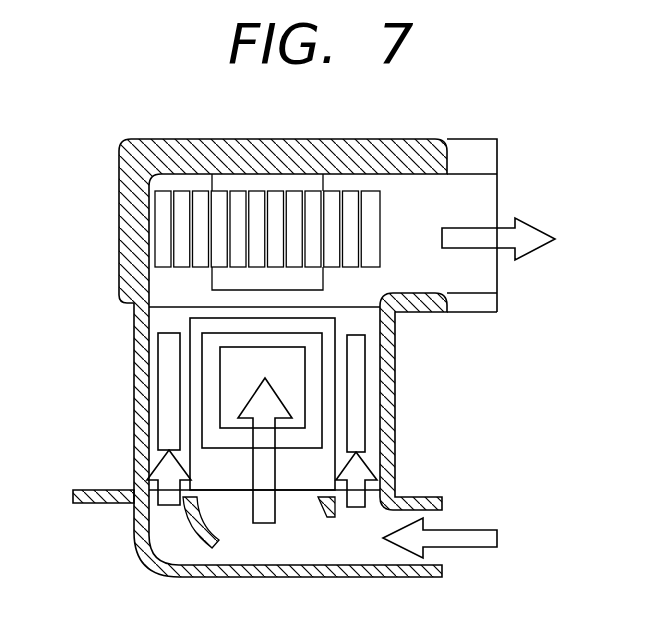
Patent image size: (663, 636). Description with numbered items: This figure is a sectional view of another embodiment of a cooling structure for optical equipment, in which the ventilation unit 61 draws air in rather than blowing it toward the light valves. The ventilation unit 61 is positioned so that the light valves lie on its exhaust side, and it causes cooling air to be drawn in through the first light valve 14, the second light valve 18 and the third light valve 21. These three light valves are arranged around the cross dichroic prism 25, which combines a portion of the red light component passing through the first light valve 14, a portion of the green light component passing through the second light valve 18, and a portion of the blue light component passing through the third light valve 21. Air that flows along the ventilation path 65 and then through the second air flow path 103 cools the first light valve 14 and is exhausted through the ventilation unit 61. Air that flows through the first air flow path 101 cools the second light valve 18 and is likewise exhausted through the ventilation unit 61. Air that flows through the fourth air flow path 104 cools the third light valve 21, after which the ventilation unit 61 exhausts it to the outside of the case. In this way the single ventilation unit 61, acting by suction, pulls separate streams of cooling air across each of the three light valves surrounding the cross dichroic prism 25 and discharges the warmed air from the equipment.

The ventilation unit 61 is at (127, 218).
The ventilation path 65 is at (427, 497).
The cross dichroic prism 25 is at (234, 473).
The second light valve 18 is at (293, 387).
The third light valve 21 is at (165, 357).
The first light valve 14 is at (358, 362).
The first air flow path 101 is at (253, 405).
The second air flow path 103 is at (360, 464).
The fourth air flow path 104 is at (148, 464).